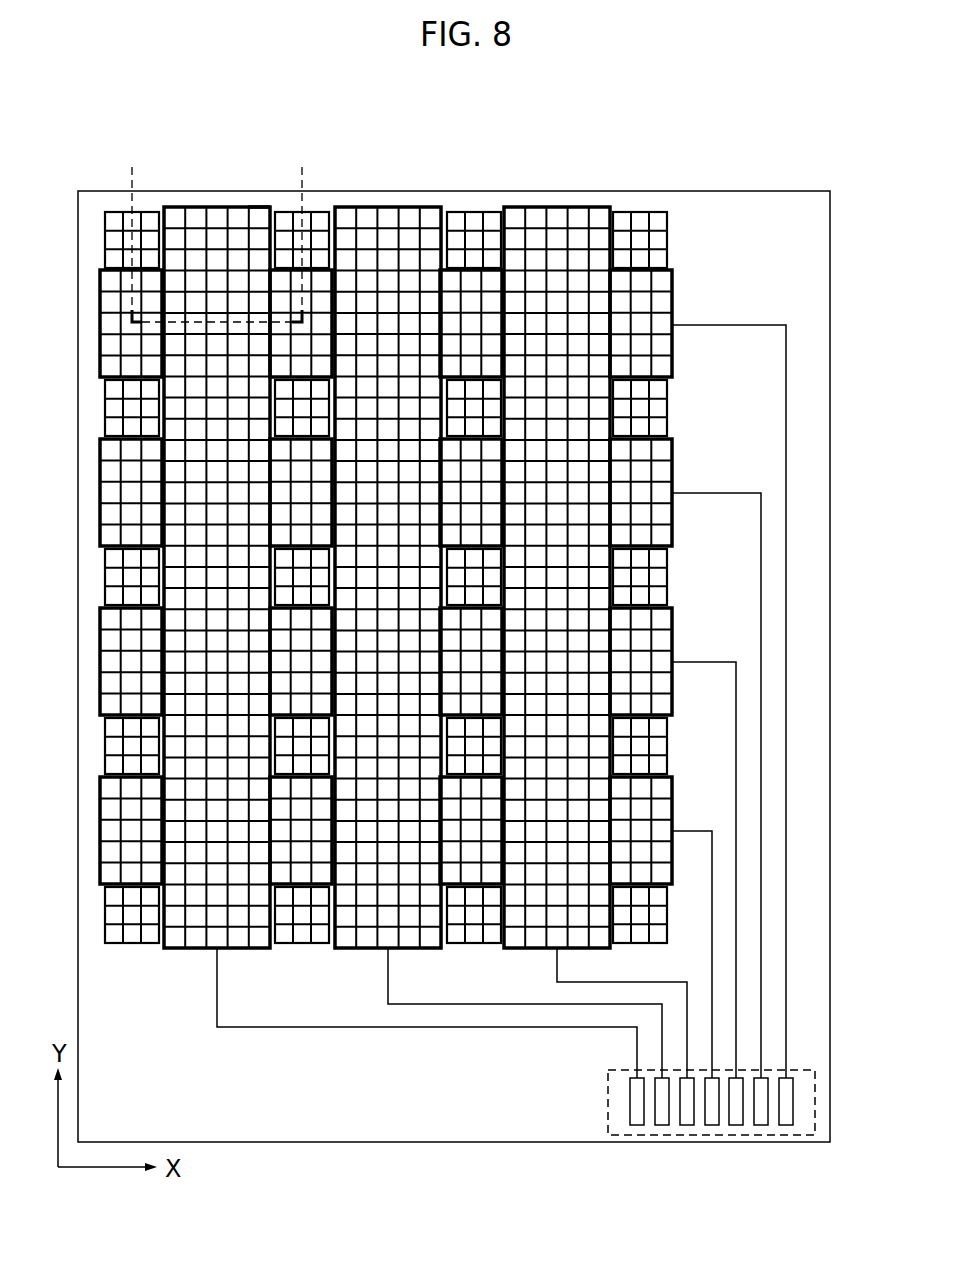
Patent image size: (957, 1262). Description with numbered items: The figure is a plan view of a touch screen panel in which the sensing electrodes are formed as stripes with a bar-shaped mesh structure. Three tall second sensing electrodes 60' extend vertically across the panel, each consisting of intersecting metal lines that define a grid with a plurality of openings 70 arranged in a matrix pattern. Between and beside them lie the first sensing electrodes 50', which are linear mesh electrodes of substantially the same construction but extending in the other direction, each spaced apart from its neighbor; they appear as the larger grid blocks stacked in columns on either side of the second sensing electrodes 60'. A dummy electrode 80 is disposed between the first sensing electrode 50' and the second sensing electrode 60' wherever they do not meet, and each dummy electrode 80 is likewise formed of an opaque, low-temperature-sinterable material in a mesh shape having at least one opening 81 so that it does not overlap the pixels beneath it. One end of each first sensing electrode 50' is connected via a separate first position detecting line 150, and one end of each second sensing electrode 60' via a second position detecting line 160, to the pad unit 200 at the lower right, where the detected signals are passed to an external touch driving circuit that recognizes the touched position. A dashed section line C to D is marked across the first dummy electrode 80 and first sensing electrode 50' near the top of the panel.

The first sensing electrode 50' is at (93, 323).
The second sensing electrode 60' is at (217, 543).
The opening 70 is at (259, 218).
The dummy electrode 80 is at (105, 203).
The opening 81 is at (150, 218).
The first position detecting line 150 is at (785, 752).
The second position detecting line 160 is at (318, 1028).
The pad unit 200 is at (815, 1102).
The section line C is at (208, 229).
The section line D is at (303, 229).